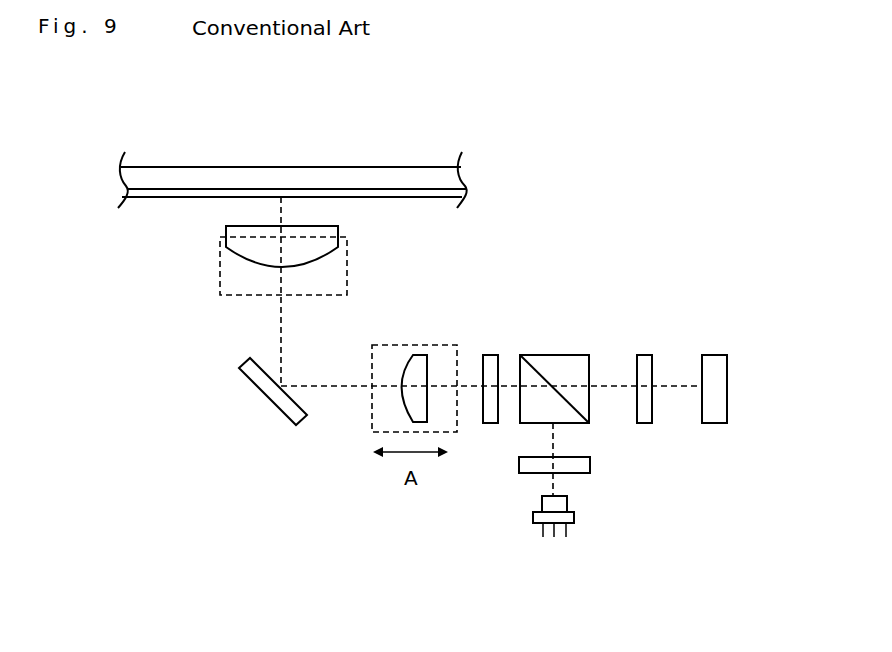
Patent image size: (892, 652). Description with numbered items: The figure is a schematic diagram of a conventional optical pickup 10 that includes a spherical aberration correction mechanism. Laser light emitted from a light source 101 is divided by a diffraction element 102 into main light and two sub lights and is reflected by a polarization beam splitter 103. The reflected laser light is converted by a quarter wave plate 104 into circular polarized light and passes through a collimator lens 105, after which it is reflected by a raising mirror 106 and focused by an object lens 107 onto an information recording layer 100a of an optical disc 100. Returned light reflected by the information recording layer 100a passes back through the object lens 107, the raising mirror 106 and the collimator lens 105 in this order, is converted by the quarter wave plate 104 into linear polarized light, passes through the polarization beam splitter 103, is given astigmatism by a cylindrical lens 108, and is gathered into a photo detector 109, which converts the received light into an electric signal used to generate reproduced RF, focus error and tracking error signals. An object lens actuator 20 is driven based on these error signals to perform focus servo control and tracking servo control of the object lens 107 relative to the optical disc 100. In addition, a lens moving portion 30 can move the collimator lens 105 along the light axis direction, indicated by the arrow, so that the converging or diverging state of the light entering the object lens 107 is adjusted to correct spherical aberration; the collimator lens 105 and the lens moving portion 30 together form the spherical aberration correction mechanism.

The conventional optical pickup 10 is at (580, 235).
The object lens actuator 20 is at (347, 270).
The lens moving portion 30 is at (372, 370).
The optical disc 100 is at (253, 167).
The information recording layer 100a is at (393, 190).
The light source 101 is at (530, 522).
The diffraction element 102 is at (589, 472).
The polarization beam splitter 103 is at (553, 355).
The quarter wave plate 104 is at (492, 352).
The collimator lens 105 is at (425, 372).
The raising mirror 106 is at (278, 410).
The object lens 107 is at (325, 235).
The cylindrical lens 108 is at (645, 352).
The photo detector 109 is at (716, 423).